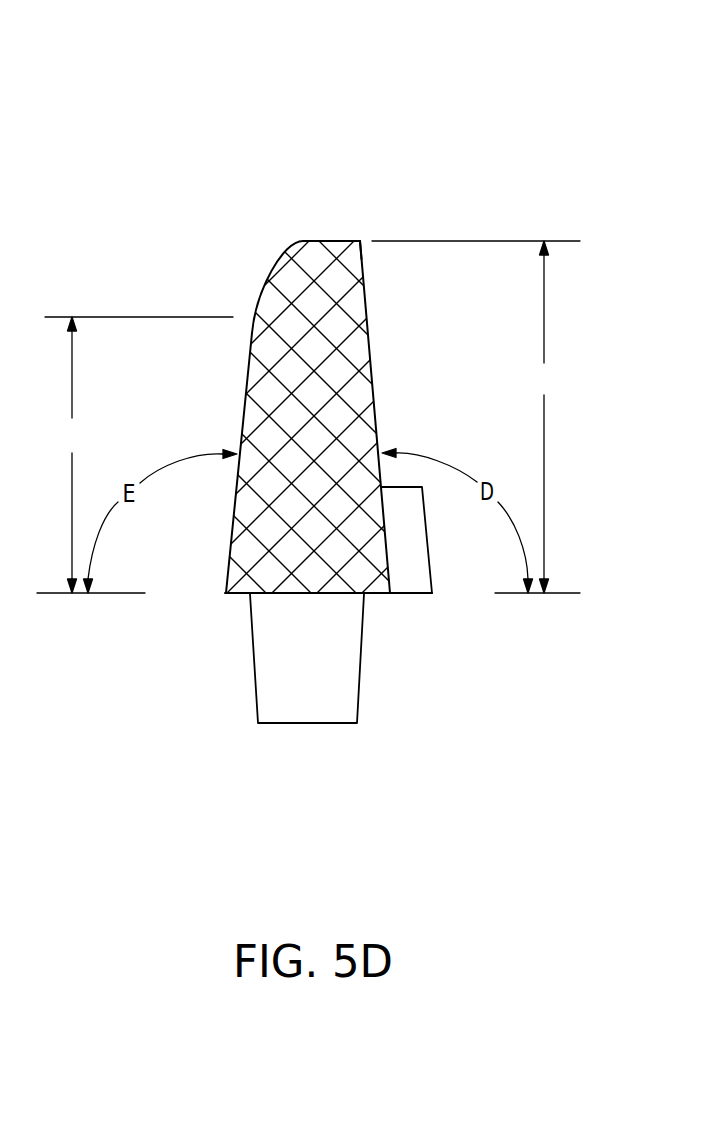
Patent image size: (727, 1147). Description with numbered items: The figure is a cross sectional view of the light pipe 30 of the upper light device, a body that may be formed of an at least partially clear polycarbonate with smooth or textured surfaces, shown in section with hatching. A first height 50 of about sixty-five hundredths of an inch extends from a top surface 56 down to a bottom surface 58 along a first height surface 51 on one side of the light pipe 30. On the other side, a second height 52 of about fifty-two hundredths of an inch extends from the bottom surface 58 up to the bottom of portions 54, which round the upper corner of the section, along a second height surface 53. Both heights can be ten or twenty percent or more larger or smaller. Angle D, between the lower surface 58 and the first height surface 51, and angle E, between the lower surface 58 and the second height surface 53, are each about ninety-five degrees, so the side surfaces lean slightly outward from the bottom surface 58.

The light pipe 30 is at (344, 102).
The first height 50 is at (476, 417).
The first height surface 51 is at (367, 307).
The second height 52 is at (135, 455).
The second height surface 53 is at (248, 378).
The portions 54 is at (270, 257).
The top surface 56 is at (340, 241).
The bottom surface 58 is at (372, 596).